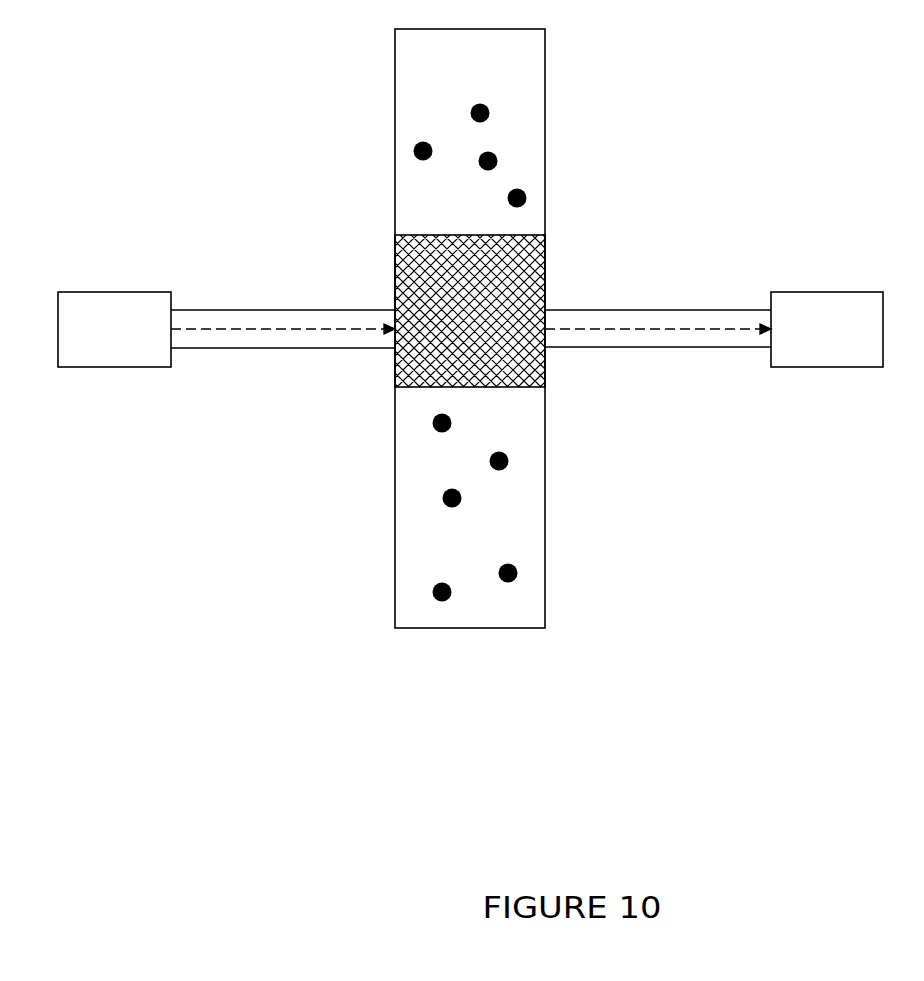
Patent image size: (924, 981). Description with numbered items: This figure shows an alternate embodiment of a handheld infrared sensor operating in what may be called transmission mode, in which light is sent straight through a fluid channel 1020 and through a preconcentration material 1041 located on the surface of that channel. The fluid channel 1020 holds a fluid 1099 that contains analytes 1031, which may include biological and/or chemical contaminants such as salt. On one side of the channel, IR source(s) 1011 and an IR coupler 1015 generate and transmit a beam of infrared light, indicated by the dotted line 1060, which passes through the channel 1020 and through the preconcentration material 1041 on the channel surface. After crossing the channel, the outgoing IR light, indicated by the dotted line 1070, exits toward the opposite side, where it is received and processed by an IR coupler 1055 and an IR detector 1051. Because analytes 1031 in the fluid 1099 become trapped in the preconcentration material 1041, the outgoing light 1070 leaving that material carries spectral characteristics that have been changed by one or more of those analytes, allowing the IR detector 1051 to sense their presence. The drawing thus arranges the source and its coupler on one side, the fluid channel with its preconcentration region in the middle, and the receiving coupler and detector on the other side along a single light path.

The IR source(s) 1011 is at (133, 291).
The IR coupler 1015 is at (257, 310).
The fluid channel 1020 is at (545, 498).
The analytes 1031 is at (523, 193).
The preconcentration material 1041 is at (393, 365).
The IR detector 1051 is at (797, 291).
The IR coupler 1055 is at (697, 348).
The beam of infrared light 1060 is at (310, 331).
The outgoing IR light 1070 is at (582, 329).
The fluid 1099 is at (431, 88).